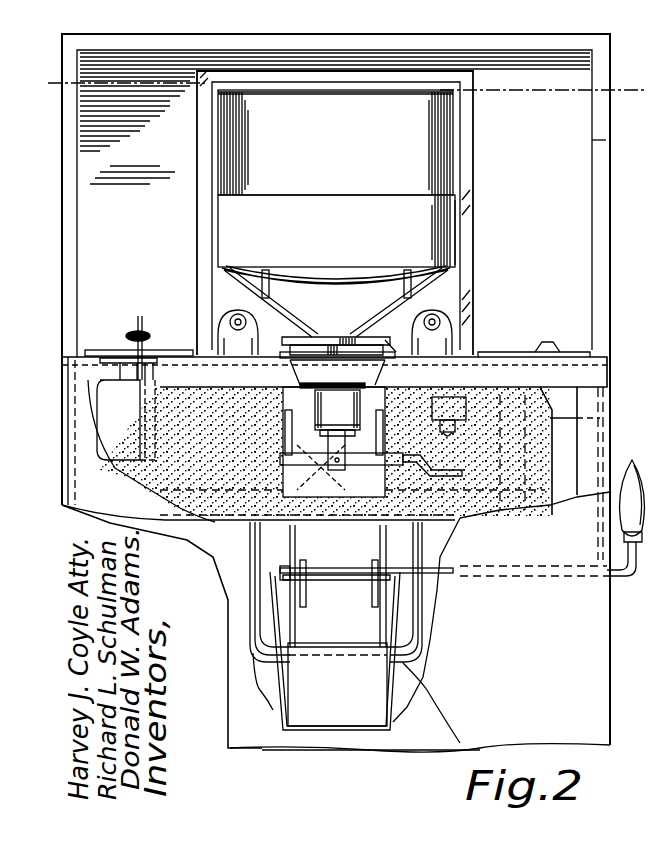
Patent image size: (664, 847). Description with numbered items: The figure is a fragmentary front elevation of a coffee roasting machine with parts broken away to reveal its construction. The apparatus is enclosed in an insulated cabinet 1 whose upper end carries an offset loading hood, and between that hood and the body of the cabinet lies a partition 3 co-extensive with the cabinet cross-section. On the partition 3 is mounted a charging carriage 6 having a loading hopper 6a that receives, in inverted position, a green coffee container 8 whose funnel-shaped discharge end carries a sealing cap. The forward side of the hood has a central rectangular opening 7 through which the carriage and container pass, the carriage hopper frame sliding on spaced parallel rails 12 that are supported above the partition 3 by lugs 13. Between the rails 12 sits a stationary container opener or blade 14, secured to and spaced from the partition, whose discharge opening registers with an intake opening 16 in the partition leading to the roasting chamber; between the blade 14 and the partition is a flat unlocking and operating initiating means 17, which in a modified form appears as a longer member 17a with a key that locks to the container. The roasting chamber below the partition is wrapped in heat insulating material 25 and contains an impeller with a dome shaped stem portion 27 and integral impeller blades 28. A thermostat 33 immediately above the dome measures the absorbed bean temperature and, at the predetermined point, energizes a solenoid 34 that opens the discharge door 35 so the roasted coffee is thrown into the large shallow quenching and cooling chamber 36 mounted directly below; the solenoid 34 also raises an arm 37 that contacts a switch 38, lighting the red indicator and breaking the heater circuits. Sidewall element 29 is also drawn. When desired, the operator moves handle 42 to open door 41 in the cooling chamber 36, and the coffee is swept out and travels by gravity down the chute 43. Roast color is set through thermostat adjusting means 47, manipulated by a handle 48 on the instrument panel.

The cabinet 1 is at (660, 192).
The partition 3 is at (57, 95).
The charging carriage 6 is at (455, 236).
The loading hopper 6a is at (336, 239).
The central rectangular opening 7 is at (458, 142).
The green coffee container 8 is at (335, 142).
The rails 12 is at (233, 324).
The lugs 13 is at (245, 345).
The container opener or blade 14 is at (384, 346).
The intake opening 16 is at (372, 340).
The unlocking and operating initiating means 17 is at (292, 348).
The member 17a is at (385, 355).
The heat insulating material 25 is at (553, 508).
The dome shaped stem portion 27 is at (334, 442).
The impeller blades 28 is at (325, 454).
The side wall 29 is at (500, 486).
The thermostat 33 is at (334, 365).
The solenoid 34 is at (330, 414).
The discharge door 35 is at (341, 450).
The arm 37 is at (422, 465).
The switch 38 is at (456, 416).
The quenching and cooling chamber 36 is at (432, 542).
The door 41 is at (360, 612).
The handle 42 is at (648, 452).
The chute 43 is at (388, 730).
The thermostat adjusting means 47 is at (162, 552).
The handle 48 is at (140, 300).